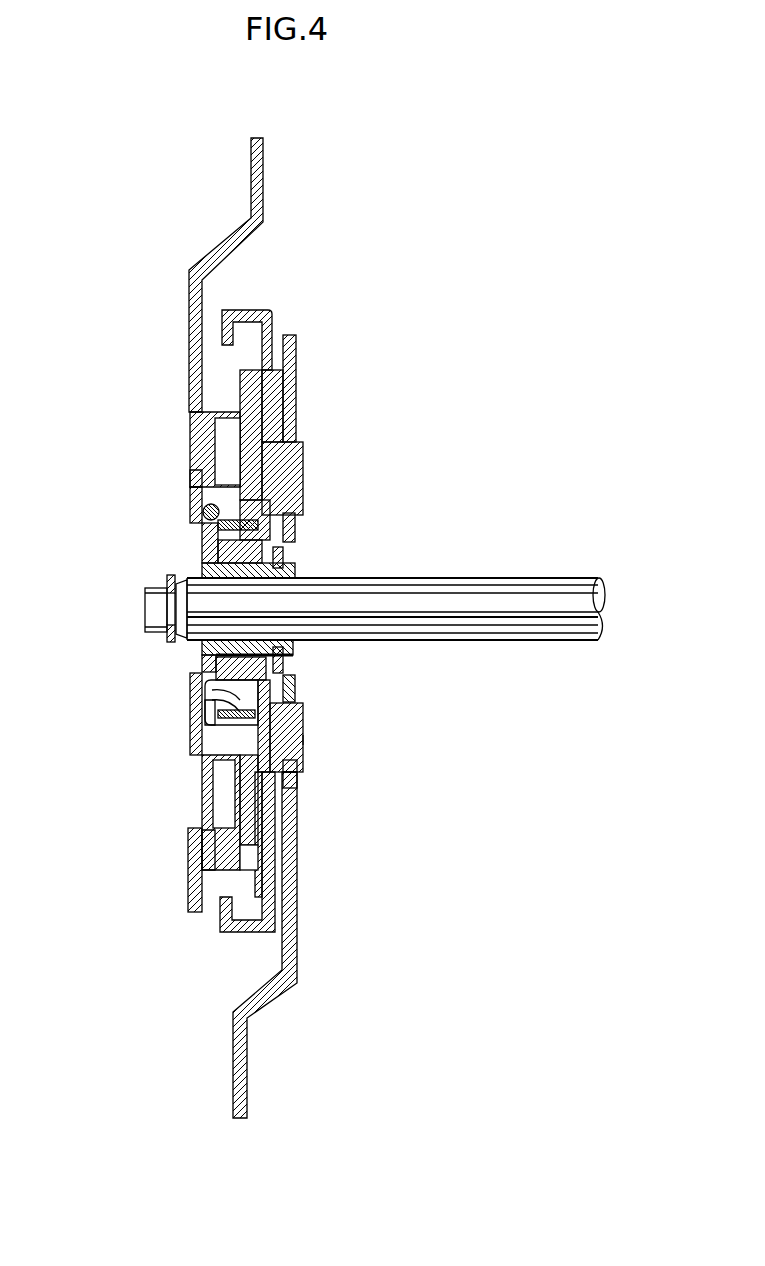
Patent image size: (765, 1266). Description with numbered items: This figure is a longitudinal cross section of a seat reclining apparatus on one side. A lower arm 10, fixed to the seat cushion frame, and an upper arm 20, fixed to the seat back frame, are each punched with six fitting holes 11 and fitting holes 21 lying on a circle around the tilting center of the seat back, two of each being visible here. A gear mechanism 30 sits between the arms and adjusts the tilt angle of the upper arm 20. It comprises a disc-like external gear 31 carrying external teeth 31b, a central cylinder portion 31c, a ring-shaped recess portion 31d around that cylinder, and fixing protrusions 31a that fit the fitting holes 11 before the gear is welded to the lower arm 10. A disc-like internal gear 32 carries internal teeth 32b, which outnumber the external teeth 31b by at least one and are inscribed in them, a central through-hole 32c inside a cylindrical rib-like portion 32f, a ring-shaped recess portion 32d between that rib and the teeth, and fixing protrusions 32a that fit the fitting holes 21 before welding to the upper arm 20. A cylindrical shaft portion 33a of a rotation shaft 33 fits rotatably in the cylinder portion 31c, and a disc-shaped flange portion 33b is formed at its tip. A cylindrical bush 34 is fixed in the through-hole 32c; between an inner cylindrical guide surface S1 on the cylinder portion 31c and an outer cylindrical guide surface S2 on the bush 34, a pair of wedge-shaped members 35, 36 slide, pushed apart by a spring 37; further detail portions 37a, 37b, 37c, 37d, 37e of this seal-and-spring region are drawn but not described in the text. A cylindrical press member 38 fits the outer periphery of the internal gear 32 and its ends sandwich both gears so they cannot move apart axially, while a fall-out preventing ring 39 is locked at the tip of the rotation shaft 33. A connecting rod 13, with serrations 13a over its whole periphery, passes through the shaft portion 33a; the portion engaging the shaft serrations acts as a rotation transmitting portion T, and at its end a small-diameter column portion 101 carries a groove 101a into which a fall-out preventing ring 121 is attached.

The lower arm 10 is at (266, 1001).
The upper arm 20 is at (270, 196).
The gear mechanism 30 is at (376, 433).
The cylindrical press member 38 is at (238, 312).
The ring-shaped recess portion 32d is at (297, 366).
The ring-shaped recess portion 31d is at (200, 410).
The fixing protrusions 32a is at (202, 437).
The fitting holes 21 is at (190, 485).
The seal lip 37a is at (197, 500).
The through-hole 32c is at (202, 528).
The flange portion 33b is at (205, 535).
The cylinder portion 31c is at (205, 555).
The cylindrical rib-like portion 32f is at (248, 503).
The fixing protrusions 31a is at (290, 455).
The fitting holes 11 is at (291, 517).
The cylindrical bush 34 is at (221, 523).
The fall-out preventing ring 39 is at (282, 552).
The rotation shaft 33 is at (295, 565).
The cylindrical shaft portion 33a is at (288, 660).
The inner cylindrical guide surface S1 is at (295, 688).
The outer cylindrical guide surface S2 is at (303, 738).
The spring 37 is at (195, 693).
The wedge-shaped member 35 is at (168, 691).
The wedge-shaped member 36 is at (192, 675).
The seal lip portion 37b is at (132, 713).
The seal lip portion 37c is at (192, 712).
The seal core 37d is at (319, 724).
The seal core 37e is at (272, 708).
The external gear 31 is at (277, 813).
The external teeth 31b is at (270, 837).
The internal teeth 32b is at (296, 852).
The internal gear 32 is at (195, 855).
The rotation transmitting portion T is at (402, 598).
The connecting rod 13 is at (396, 631).
The serrations 13a is at (471, 644).
The fall-out preventing ring 121 is at (176, 590).
The groove 101a is at (167, 600).
The small-diameter column portion 101 is at (145, 620).